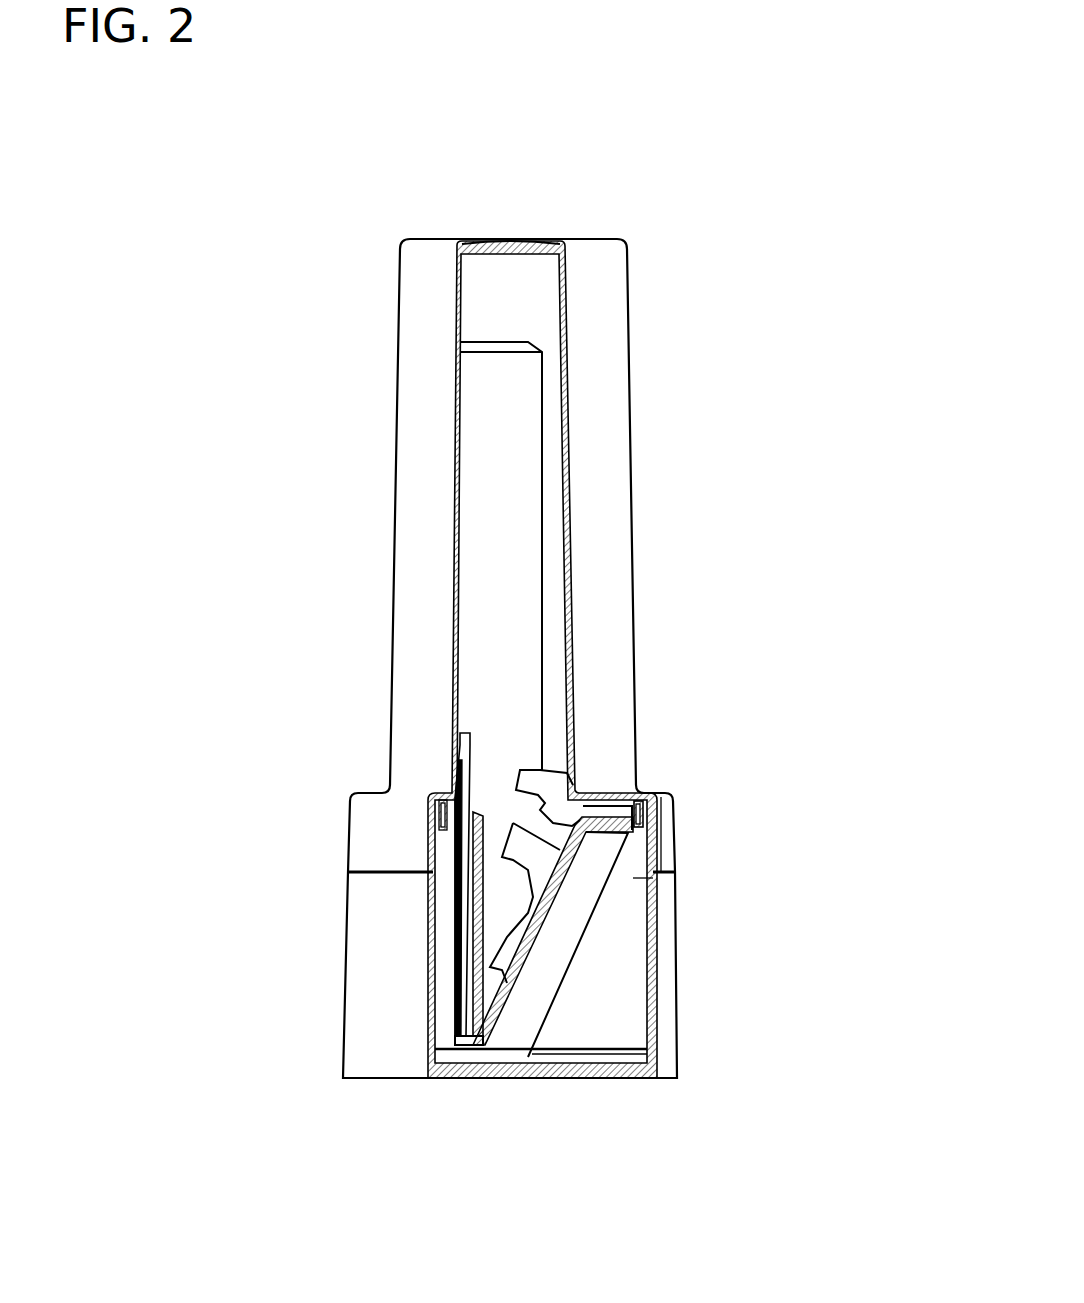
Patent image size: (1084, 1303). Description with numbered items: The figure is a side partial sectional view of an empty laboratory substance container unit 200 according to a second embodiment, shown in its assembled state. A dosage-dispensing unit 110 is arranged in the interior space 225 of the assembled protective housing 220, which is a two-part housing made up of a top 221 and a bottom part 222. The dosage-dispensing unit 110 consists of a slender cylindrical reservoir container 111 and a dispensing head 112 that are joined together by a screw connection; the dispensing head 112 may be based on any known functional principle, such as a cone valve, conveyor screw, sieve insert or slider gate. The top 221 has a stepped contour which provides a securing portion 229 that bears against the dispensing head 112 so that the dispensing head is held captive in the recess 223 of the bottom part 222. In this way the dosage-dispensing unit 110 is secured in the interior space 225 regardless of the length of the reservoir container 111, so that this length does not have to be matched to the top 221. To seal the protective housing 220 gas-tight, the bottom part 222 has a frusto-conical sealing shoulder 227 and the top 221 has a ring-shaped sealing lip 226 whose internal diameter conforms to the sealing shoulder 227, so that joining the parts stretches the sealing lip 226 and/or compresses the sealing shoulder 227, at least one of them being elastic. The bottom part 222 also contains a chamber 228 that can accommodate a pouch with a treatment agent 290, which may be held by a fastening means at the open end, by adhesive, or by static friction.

The laboratory substance container unit 200 is at (684, 236).
The protective housing 220 is at (371, 633).
The top 221 is at (392, 829).
The bottom part 222 is at (374, 901).
The interior space 225 is at (520, 297).
The dosage-dispensing unit 110 is at (511, 590).
The reservoir container 111 is at (500, 440).
The dispensing head 112 is at (537, 870).
The sealing lip 226 is at (646, 804).
The sealing shoulder 227 is at (655, 830).
The recess 223 is at (558, 960).
The securing portion 229 is at (569, 801).
The treatment agent 290 is at (476, 914).
The chamber 228 is at (462, 1047).